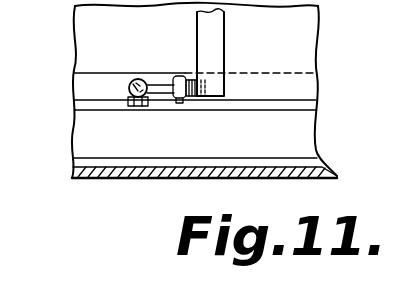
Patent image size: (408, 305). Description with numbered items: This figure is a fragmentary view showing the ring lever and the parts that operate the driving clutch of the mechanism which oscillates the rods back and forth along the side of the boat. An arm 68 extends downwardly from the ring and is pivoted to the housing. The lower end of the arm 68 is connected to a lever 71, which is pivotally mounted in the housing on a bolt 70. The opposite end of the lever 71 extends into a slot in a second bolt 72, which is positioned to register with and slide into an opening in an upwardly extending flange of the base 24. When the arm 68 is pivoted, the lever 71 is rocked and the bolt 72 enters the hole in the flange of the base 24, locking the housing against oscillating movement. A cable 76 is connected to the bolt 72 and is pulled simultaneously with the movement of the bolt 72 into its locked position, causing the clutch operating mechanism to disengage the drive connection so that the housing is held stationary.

The base 24 is at (97, 176).
The arm 68 is at (220, 37).
The bolt 70 is at (186, 99).
The lever 71 is at (171, 74).
The bolt 72 is at (130, 83).
The cable 76 is at (126, 106).